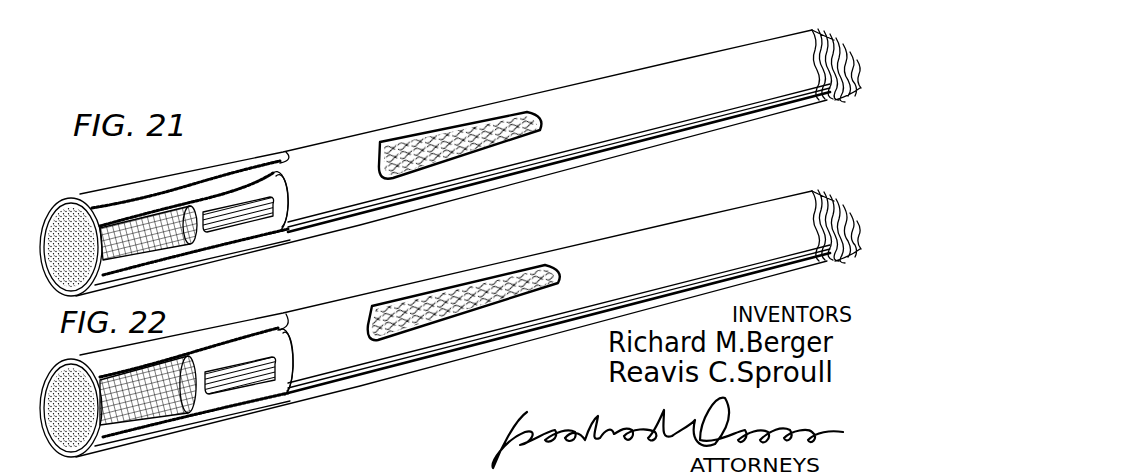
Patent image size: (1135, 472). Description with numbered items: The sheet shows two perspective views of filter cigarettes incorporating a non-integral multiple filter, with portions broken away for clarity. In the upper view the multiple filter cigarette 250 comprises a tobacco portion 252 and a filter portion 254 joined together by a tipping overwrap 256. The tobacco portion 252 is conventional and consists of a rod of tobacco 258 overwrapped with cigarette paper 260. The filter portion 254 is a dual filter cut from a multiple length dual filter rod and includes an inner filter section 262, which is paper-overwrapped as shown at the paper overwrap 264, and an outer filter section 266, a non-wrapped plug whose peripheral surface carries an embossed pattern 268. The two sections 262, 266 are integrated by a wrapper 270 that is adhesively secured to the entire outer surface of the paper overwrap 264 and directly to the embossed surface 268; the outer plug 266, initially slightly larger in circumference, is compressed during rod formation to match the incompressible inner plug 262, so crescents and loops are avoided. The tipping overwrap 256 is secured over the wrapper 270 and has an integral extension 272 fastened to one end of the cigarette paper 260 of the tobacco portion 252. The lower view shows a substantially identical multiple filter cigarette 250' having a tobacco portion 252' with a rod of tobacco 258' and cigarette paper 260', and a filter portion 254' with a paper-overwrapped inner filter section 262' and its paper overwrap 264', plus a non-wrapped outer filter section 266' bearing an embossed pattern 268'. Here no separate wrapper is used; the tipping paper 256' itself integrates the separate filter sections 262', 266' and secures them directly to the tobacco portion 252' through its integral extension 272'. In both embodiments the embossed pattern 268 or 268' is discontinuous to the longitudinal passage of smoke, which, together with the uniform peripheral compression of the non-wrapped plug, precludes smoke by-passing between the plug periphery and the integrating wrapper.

In FIG. 21, the multiple filter cigarette 250 is at (449, 162).
In FIG. 21, the tobacco portion 252 is at (468, 162).
In FIG. 21, the filter portion 254 is at (218, 158).
In FIG. 21, the tipping overwrap 256 is at (180, 187).
In FIG. 21, the rod of tobacco 258 is at (479, 161).
In FIG. 21, the cigarette paper 260 is at (476, 129).
In FIG. 21, the inner filter section 262 is at (325, 218).
In FIG. 21, the paper overwrap 264 is at (262, 238).
In FIG. 21, the outer filter section 266 is at (192, 262).
In FIG. 21, the embossed pattern 268 is at (164, 191).
In FIG. 21, the wrapper 270 is at (122, 217).
In FIG. 21, the integral extension 272 is at (311, 136).
In FIG. 22, the multiple filter cigarette 250' is at (449, 331).
In FIG. 22, the tobacco portion 252' is at (468, 323).
In FIG. 22, the filter portion 254' is at (211, 453).
In FIG. 22, the tipping paper 256' is at (223, 322).
In FIG. 22, the rod of tobacco 258' is at (463, 328).
In FIG. 22, the cigarette paper 260' is at (464, 298).
In FIG. 22, the inner filter section 262' is at (220, 388).
In FIG. 22, the paper overwrap 264' is at (291, 390).
In FIG. 22, the outer filter section 266' is at (192, 436).
In FIG. 22, the embossed pattern 268' is at (116, 393).
In FIG. 22, the integral extension 272' is at (312, 298).